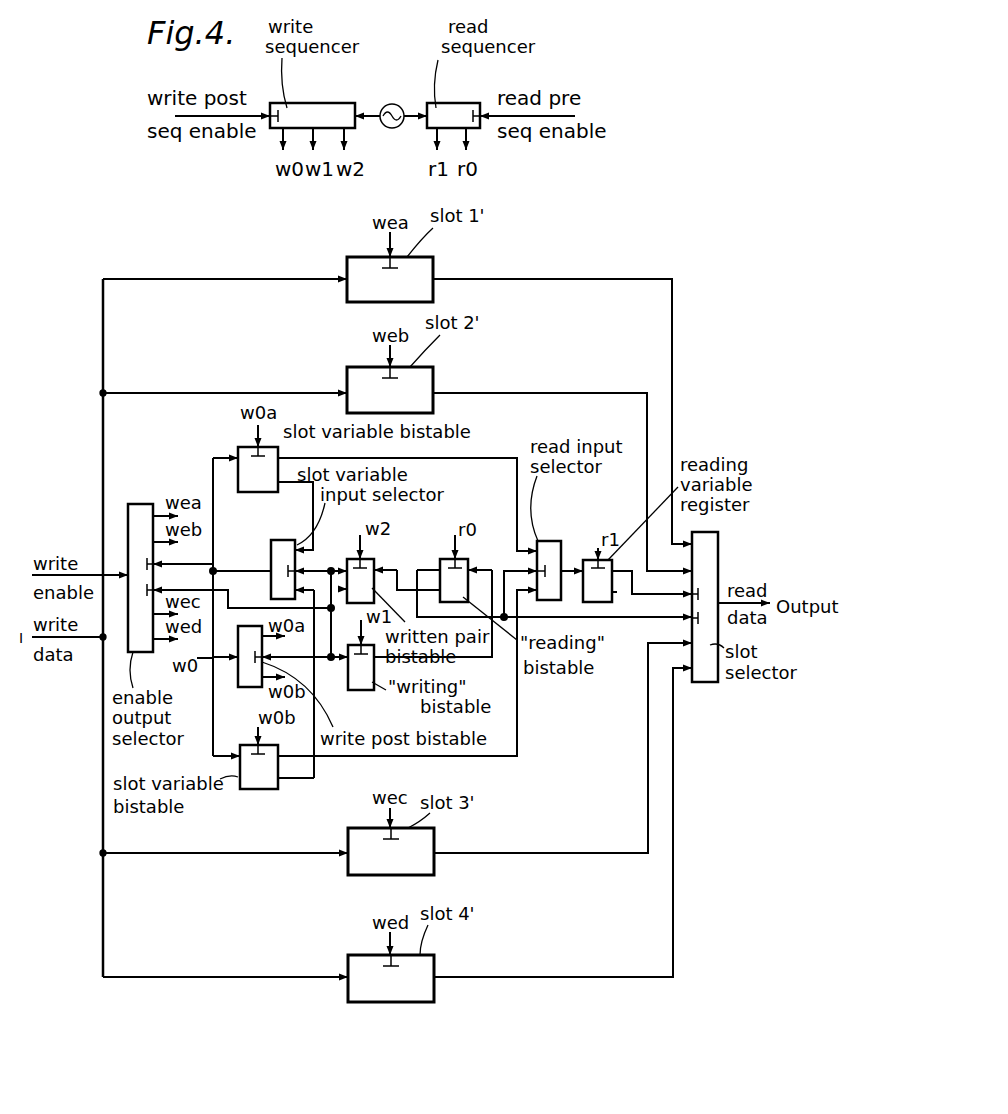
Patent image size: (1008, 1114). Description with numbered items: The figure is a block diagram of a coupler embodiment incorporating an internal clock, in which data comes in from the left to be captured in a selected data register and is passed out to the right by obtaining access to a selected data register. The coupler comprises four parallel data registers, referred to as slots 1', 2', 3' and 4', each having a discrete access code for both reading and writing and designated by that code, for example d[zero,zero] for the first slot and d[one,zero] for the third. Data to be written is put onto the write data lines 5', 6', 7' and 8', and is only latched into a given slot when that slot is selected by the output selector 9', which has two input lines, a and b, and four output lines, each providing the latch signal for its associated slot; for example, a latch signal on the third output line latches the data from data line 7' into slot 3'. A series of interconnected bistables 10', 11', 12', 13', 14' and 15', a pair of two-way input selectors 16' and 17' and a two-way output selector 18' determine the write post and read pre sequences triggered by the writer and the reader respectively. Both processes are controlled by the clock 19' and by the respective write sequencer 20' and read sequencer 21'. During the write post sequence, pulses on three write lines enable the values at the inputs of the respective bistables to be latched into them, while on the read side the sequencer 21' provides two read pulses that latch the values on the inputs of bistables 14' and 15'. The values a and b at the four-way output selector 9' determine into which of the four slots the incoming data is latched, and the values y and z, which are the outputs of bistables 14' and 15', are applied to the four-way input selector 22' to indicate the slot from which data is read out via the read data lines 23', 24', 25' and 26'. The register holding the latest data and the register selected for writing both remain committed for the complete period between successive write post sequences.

The data register slot d[0,0] 1' is at (414, 267).
The data register slot d[0,1] 2' is at (411, 376).
The data register slot d[1,0] 3' is at (411, 844).
The data register slot d[1,1] 4' is at (412, 968).
The write data line 5' is at (225, 260).
The write data line 6' is at (225, 369).
The write data line 7' is at (225, 833).
The write data line 8' is at (225, 957).
The output selector 9' is at (144, 542).
The bistable 10' is at (238, 461).
The bistable 11' is at (237, 789).
The bistable 12' is at (353, 555).
The bistable 13' is at (384, 687).
The bistable 14' is at (441, 554).
The bistable 15' is at (593, 554).
The two-way input selector 16' is at (278, 553).
The two-way input selector 17' is at (552, 553).
The two-way output selector 18' is at (242, 679).
The clock 19' is at (406, 94).
The write sequencer 20' is at (313, 94).
The read sequencer 21' is at (453, 94).
The four-way input selector 22' is at (714, 629).
The read data line 23' is at (577, 413).
The read data line 24' is at (562, 457).
The read data line 25' is at (563, 747).
The read data line 26' is at (563, 821).